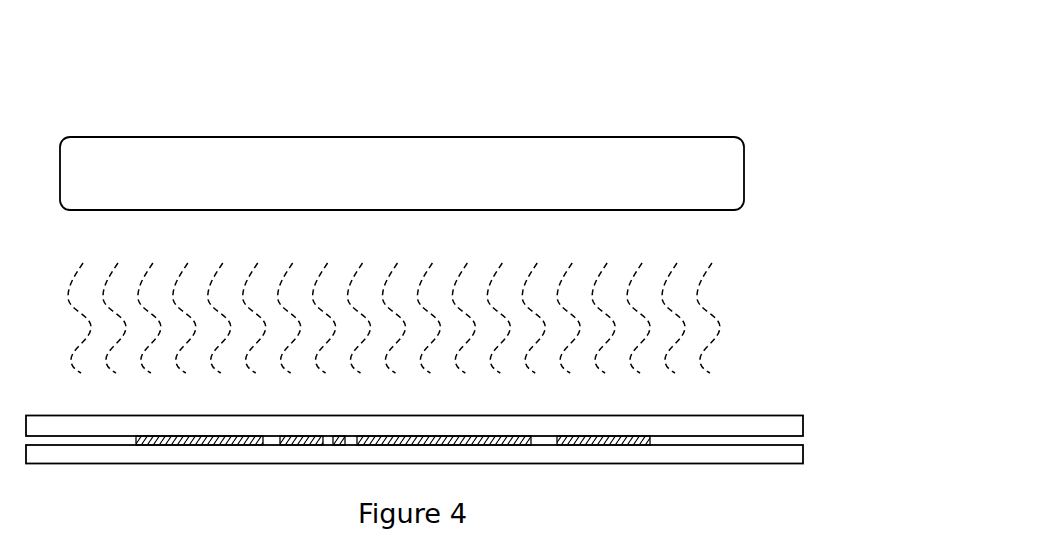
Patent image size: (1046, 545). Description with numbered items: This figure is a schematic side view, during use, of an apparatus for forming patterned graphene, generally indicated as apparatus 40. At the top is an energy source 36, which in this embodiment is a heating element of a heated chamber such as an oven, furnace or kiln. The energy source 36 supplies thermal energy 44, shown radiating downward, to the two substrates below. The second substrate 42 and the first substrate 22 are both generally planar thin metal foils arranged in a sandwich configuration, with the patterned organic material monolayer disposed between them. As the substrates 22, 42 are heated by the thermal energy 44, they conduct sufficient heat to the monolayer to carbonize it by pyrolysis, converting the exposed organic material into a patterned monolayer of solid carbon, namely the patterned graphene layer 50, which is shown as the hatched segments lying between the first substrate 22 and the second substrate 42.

The apparatus for forming patterned graphene 40 is at (698, 80).
The energy source 36 is at (732, 171).
The thermal energy 44 is at (697, 302).
The second substrate 42 is at (797, 428).
The first substrate 22 is at (795, 455).
The patterned graphene layer 50 is at (630, 437).